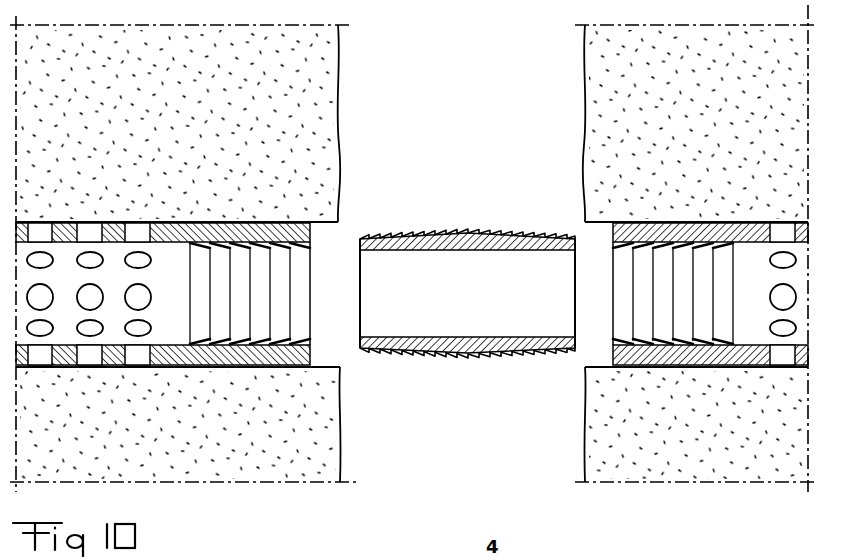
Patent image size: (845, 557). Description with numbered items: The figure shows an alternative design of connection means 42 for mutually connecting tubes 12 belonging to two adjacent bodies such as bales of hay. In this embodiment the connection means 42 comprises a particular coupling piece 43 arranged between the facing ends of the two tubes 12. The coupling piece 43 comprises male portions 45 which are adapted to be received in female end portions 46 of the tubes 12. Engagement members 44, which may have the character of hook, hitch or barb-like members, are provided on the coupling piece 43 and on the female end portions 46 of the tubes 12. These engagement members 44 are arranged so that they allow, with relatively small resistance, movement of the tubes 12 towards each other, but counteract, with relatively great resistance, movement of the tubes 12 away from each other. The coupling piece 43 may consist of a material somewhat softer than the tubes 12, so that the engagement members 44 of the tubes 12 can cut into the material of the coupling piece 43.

The tube 12 is at (159, 352).
The connection means 42 is at (470, 198).
The coupling piece 43 is at (467, 350).
The engagement members 44 is at (289, 240).
The male portions 45 is at (375, 313).
The female end portions 46 is at (302, 314).